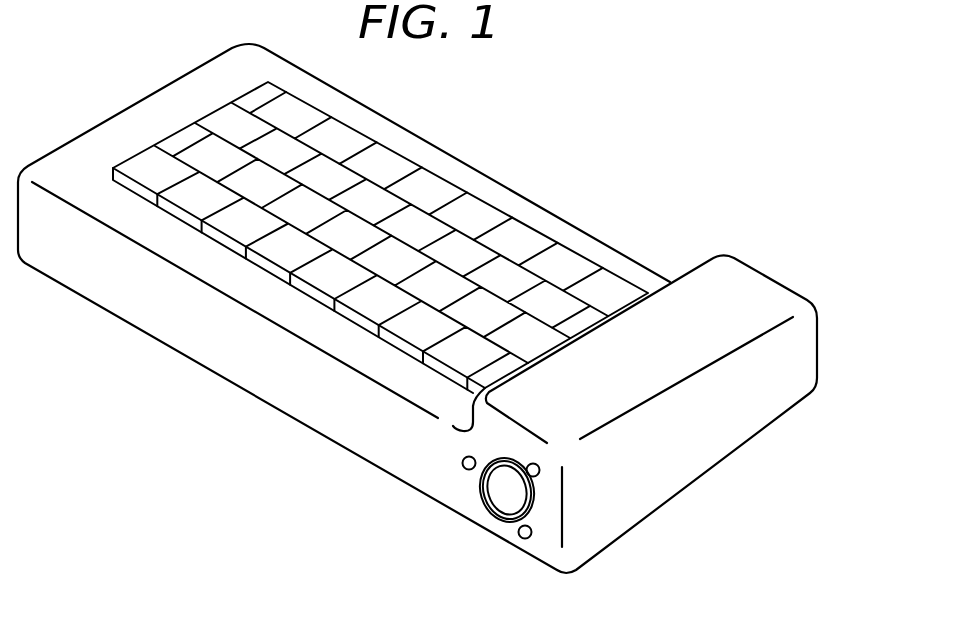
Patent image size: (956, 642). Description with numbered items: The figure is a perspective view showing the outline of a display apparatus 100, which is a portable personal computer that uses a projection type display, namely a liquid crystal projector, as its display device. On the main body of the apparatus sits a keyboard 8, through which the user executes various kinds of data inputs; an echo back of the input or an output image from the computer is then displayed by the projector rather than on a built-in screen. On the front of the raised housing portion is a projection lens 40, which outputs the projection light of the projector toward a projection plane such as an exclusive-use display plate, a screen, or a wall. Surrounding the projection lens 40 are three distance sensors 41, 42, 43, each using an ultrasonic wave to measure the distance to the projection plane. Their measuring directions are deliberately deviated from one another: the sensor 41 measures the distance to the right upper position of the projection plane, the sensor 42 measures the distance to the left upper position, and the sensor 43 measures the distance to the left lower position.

The display apparatus 100 is at (641, 232).
The keyboard 8 is at (478, 212).
The projection lens 40 is at (510, 502).
The distance sensor 41 is at (465, 467).
The distance sensor 42 is at (538, 477).
The distance sensor 43 is at (522, 540).